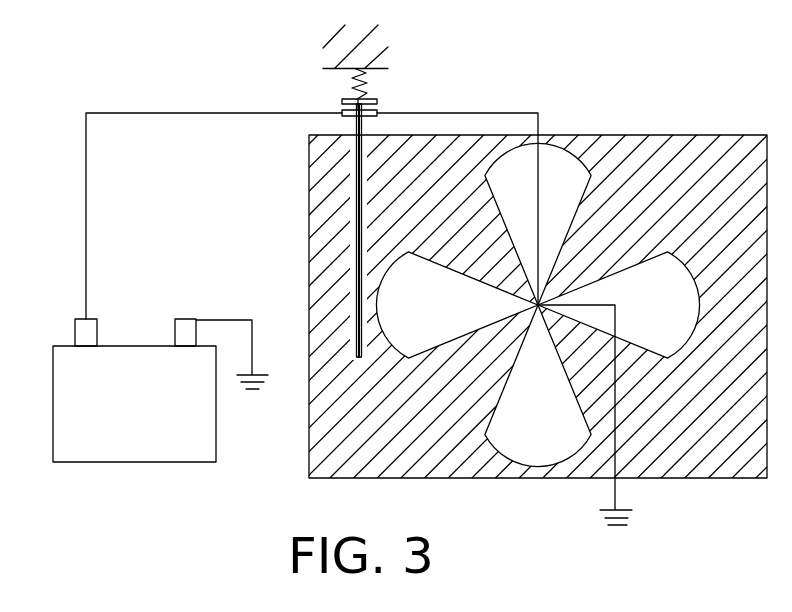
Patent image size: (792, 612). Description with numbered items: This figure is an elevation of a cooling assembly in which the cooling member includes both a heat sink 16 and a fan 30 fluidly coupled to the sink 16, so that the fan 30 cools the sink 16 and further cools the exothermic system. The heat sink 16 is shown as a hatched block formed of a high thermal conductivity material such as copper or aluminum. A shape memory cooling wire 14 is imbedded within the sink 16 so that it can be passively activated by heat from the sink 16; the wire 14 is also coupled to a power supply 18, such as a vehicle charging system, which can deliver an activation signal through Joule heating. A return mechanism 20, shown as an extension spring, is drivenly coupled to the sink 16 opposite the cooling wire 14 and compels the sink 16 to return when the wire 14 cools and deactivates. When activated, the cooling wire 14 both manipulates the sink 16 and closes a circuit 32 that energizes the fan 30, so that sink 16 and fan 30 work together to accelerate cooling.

The cooling wire 14 is at (357, 253).
The heat sink 16 is at (653, 135).
The power supply 18 is at (140, 410).
The return mechanism 20 is at (357, 82).
The fan 30 is at (562, 152).
The circuit 32 is at (507, 113).